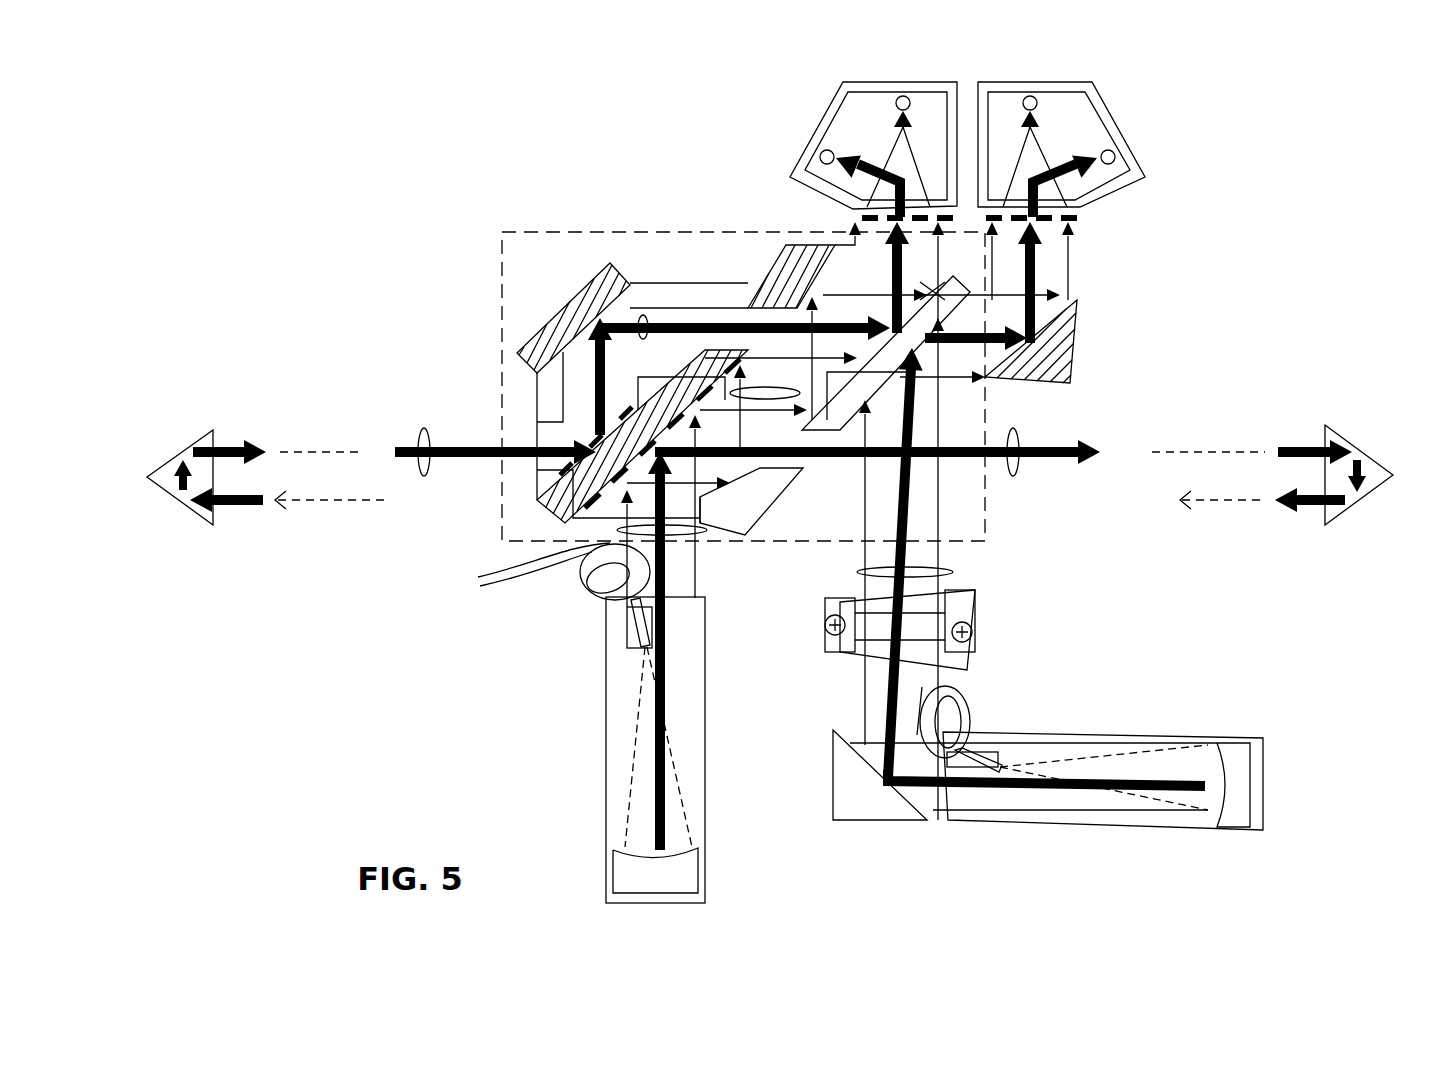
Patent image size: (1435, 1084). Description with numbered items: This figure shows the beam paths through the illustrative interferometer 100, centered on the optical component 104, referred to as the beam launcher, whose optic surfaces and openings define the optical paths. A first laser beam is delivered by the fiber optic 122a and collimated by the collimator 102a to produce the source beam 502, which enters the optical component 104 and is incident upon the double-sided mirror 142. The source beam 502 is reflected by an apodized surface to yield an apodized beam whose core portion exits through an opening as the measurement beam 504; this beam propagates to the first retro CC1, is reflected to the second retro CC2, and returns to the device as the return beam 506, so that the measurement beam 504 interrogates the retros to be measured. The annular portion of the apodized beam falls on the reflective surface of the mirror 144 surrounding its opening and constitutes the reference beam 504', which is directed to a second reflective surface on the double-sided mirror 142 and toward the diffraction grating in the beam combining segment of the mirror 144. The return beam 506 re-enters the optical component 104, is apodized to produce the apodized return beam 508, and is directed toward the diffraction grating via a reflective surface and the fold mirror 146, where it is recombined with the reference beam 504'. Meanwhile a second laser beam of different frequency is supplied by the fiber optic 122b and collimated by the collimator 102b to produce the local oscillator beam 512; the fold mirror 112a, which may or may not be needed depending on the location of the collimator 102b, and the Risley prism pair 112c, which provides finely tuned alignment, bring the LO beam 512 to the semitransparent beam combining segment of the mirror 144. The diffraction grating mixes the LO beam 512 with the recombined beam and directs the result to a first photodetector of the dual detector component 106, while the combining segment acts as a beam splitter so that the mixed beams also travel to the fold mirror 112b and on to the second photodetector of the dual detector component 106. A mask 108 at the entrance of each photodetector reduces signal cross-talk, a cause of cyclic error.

The optical system 100 is at (432, 210).
The optical component (beam launcher) 104 is at (560, 232).
The dual detector component 106 is at (768, 127).
The mask 108 is at (1088, 218).
The double-sided mirror 142 is at (803, 272).
The mirror 144 is at (775, 505).
The fold mirror 146 is at (607, 306).
The source beam 502 is at (700, 532).
The measurement beam 504 is at (1022, 474).
The reference beam 504' is at (719, 327).
The return beam 506 is at (428, 478).
The apodized return beam 508 is at (645, 315).
The local oscillator beam (LO beam) 512 is at (960, 570).
The collimator 102a is at (705, 890).
The collimator 102b is at (995, 822).
The fold mirror 112a is at (878, 822).
The fold mirror 112b is at (1080, 348).
The Risley prism pair 112c is at (978, 614).
The fiber optic 122a is at (500, 588).
The fiber optic 122b is at (968, 712).
The first retro CC1 is at (1335, 527).
The second retro CC2 is at (205, 527).